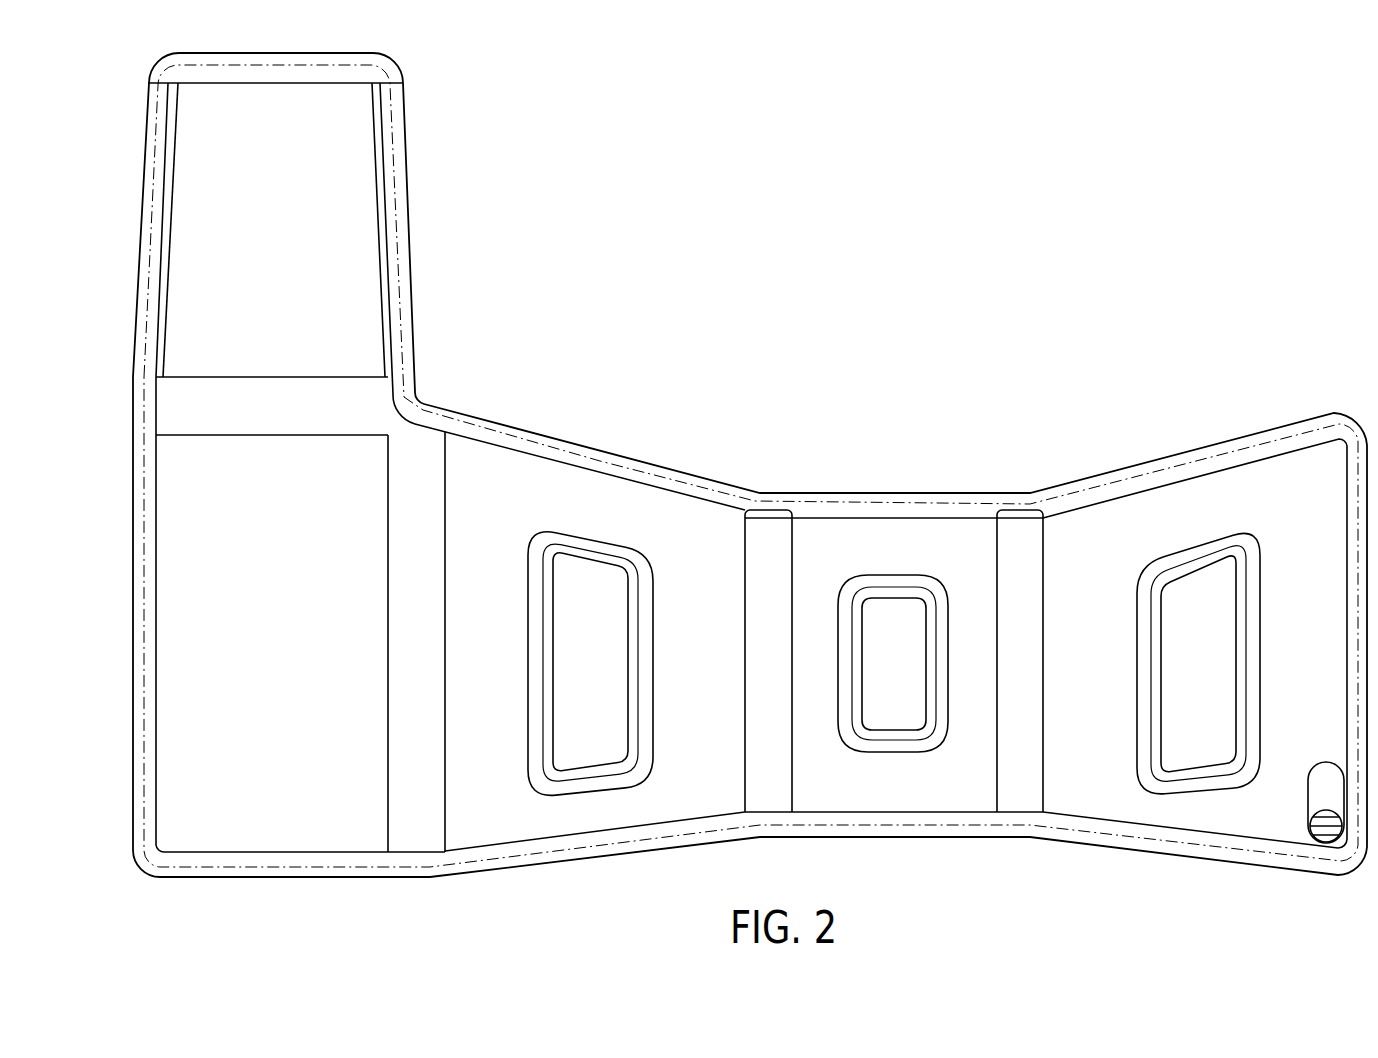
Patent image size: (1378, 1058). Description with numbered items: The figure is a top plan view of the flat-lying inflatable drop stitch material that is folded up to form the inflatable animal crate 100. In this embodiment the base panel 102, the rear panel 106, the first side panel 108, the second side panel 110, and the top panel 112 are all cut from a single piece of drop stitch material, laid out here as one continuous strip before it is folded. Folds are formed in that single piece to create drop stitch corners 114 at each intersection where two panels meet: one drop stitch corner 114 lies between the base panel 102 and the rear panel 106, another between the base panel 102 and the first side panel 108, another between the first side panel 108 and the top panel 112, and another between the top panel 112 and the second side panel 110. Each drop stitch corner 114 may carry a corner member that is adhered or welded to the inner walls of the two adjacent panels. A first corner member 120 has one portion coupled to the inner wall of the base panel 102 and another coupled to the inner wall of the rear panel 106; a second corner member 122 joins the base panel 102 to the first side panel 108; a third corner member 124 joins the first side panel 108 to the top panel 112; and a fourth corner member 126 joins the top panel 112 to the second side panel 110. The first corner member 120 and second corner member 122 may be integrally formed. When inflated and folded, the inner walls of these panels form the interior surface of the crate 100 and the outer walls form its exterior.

The inflatable animal crate 100 is at (685, 318).
The base panel 102 is at (268, 803).
The rear panel 106 is at (318, 230).
The first side panel 108 is at (662, 802).
The second side panel 110 is at (1133, 800).
The top panel 112 is at (903, 540).
The drop stitch corner 114 is at (370, 400).
The first corner member 120 is at (308, 398).
The second corner member 122 is at (427, 803).
The third corner member 124 is at (783, 768).
The fourth corner member 126 is at (1018, 567).